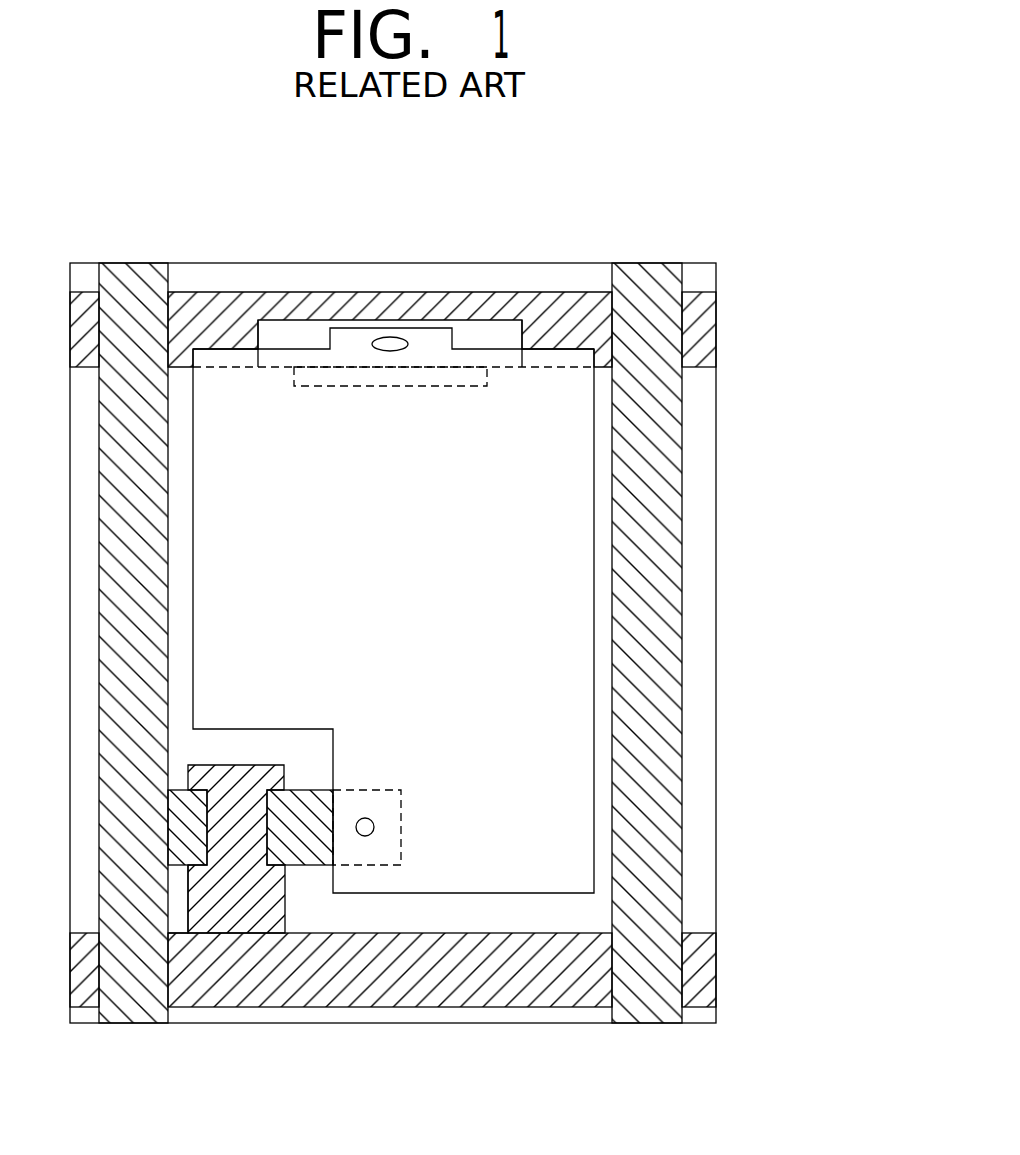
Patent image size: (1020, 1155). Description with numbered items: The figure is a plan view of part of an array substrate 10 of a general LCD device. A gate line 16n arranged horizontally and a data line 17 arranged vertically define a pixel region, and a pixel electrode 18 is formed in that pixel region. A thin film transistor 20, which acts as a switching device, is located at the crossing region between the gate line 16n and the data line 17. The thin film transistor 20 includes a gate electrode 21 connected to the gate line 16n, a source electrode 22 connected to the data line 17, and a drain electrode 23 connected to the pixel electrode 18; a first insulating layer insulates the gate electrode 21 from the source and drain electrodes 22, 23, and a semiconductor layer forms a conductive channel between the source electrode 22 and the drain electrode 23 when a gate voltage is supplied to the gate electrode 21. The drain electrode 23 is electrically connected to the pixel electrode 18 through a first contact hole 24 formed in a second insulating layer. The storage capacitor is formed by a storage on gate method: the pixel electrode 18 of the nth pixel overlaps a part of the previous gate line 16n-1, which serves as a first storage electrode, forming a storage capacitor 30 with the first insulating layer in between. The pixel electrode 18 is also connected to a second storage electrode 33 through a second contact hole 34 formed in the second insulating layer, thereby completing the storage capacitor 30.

The array substrate 10 is at (744, 276).
The previous gate line 16n-1 is at (700, 338).
The gate line 16n is at (700, 968).
The data line 17 is at (653, 808).
The pixel electrode 18 is at (558, 697).
The thin film transistor 20 is at (254, 859).
The gate electrode 21 is at (240, 900).
The source electrode 22 is at (187, 868).
The drain electrode 23 is at (299, 852).
The first contact hole 24 is at (365, 818).
The storage capacitor 30 is at (390, 308).
The second storage electrode 33 is at (483, 335).
The second contact hole 34 is at (383, 343).